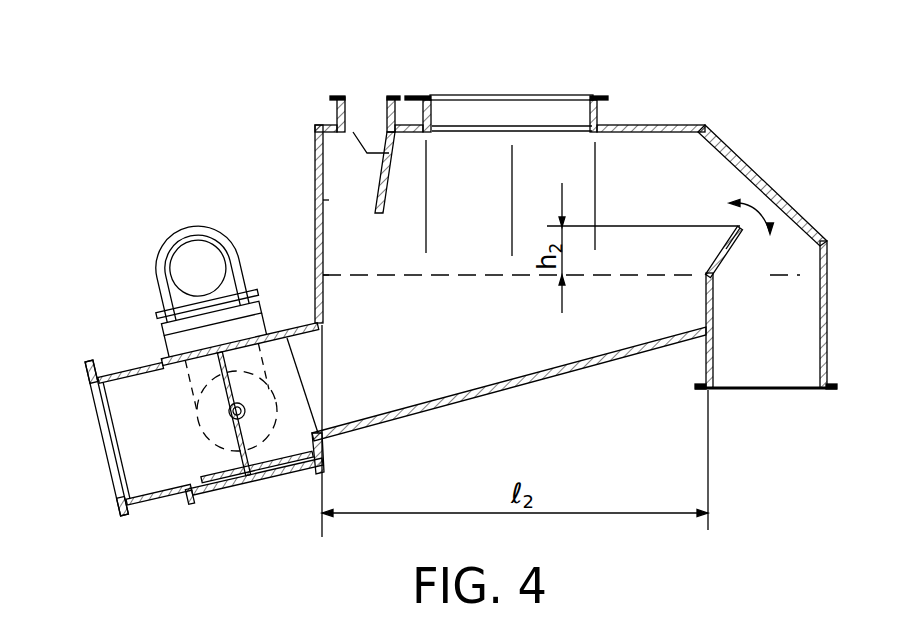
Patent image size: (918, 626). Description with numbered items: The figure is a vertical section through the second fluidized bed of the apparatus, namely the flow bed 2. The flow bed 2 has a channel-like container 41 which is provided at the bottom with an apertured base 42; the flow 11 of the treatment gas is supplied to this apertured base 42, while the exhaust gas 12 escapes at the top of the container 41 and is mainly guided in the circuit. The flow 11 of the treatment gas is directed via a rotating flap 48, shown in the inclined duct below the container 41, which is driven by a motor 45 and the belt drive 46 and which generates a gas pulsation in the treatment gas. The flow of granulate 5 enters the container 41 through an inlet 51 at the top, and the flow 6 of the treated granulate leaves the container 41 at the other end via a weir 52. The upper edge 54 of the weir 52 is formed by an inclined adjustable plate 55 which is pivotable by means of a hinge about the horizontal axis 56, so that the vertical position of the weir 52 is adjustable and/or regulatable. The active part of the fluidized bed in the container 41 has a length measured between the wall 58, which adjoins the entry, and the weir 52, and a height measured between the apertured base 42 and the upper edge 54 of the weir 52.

The flow bed 2 is at (315, 188).
The flow of granulate 5 is at (363, 85).
The flow of treated granulate 6 is at (780, 395).
The flow of treatment gas 11 is at (110, 482).
The exhaust gas 12 is at (512, 5).
The channel-like container 41 is at (650, 145).
The apertured base 42 is at (500, 275).
The motor 45 is at (177, 296).
The belt drive 46 is at (207, 226).
The rotating flap 48 is at (243, 480).
The inlet 51 is at (378, 97).
The weir 52 is at (740, 256).
The upper edge 54 is at (740, 227).
The inclined adjustable plate 55 is at (727, 247).
The horizontal axis 56 is at (716, 278).
The wall 58 is at (310, 160).